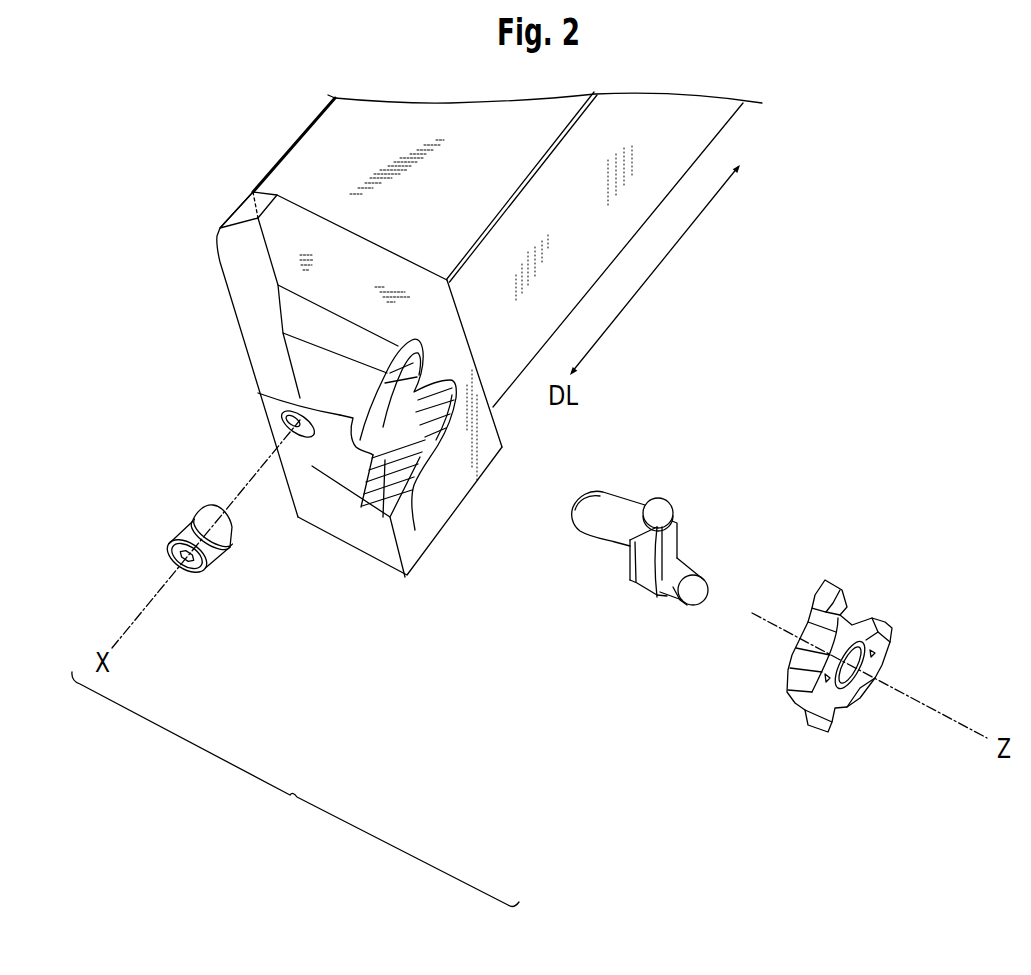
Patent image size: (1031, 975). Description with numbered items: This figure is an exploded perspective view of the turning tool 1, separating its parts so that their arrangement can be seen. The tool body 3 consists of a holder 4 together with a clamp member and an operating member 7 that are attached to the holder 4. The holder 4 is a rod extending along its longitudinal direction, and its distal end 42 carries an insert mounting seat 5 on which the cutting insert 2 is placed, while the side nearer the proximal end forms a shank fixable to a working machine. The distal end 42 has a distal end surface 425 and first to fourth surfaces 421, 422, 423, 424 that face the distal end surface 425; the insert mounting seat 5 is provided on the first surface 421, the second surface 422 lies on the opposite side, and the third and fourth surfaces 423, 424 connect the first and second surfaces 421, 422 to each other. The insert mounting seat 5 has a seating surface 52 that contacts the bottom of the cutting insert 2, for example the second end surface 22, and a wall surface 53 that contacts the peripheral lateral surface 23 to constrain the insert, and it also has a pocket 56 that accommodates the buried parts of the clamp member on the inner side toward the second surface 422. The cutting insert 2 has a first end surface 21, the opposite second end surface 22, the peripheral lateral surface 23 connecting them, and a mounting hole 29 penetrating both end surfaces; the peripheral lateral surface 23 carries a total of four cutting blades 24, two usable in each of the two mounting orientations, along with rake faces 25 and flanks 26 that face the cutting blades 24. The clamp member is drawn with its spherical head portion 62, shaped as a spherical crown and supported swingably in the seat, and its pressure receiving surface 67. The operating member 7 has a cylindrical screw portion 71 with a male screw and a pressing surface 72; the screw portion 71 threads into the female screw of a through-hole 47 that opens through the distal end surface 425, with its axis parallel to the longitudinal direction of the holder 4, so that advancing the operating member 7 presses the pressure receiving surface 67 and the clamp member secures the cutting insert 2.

The turning tool 1 is at (645, 931).
The cutting insert 2 is at (834, 663).
The tool body 3 is at (295, 789).
The holder 4 is at (290, 147).
The insert mounting seat 5 is at (402, 404).
The operating member 7 is at (148, 551).
The first end surface 21 is at (853, 697).
The second end surface 22 is at (790, 673).
The peripheral lateral surface 23 is at (807, 618).
The cutting blades 24 is at (835, 580).
The rake faces 25 is at (788, 690).
The flanks 26 is at (793, 697).
The mounting hole 29 is at (853, 630).
The distal end 42 is at (225, 283).
The through-hole 47 is at (280, 413).
The seating surface 52 is at (357, 452).
The wall surface 53 is at (385, 518).
The pocket 56 is at (358, 418).
The spherical head portion 62 is at (660, 498).
The pressure receiving surface 67 is at (610, 537).
The screw portion 71 is at (180, 532).
The pressing surface 72 is at (208, 512).
The first surface 421 is at (473, 465).
The second surface 422 is at (228, 252).
The third surface 423 is at (368, 274).
The fourth surface 424 is at (399, 558).
The distal end surface 425 is at (320, 452).